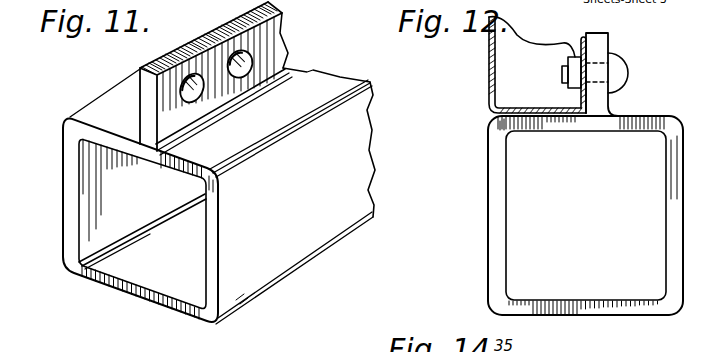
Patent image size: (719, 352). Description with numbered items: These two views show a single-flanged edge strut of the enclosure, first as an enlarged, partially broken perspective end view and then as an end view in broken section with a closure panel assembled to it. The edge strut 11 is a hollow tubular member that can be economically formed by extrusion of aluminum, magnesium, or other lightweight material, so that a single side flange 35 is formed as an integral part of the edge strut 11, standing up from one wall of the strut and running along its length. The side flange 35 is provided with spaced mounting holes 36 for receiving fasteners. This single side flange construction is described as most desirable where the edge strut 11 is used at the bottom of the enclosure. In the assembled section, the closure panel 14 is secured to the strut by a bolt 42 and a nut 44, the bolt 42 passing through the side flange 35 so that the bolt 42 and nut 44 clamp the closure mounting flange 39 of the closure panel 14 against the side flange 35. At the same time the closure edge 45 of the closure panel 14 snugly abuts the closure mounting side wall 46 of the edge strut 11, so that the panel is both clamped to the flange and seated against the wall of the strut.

In FIG. 11, the edge strut 11 is at (326, 212).
In FIG. 12, the edge strut 11 is at (488, 202).
In FIG. 12, the closure panel 14 is at (488, 54).
In FIG. 11, the side flange 35 is at (217, 62).
In FIG. 12, the side flange 35 is at (596, 46).
In FIG. 11, the mounting holes 36 is at (192, 54).
In FIG. 12, the closure mounting flange 39 is at (580, 43).
In FIG. 12, the bolt 42 is at (561, 68).
In FIG. 12, the nut 44 is at (569, 88).
In FIG. 12, the closure edge 45 is at (517, 109).
In FIG. 12, the closure mounting side wall 46 is at (536, 123).